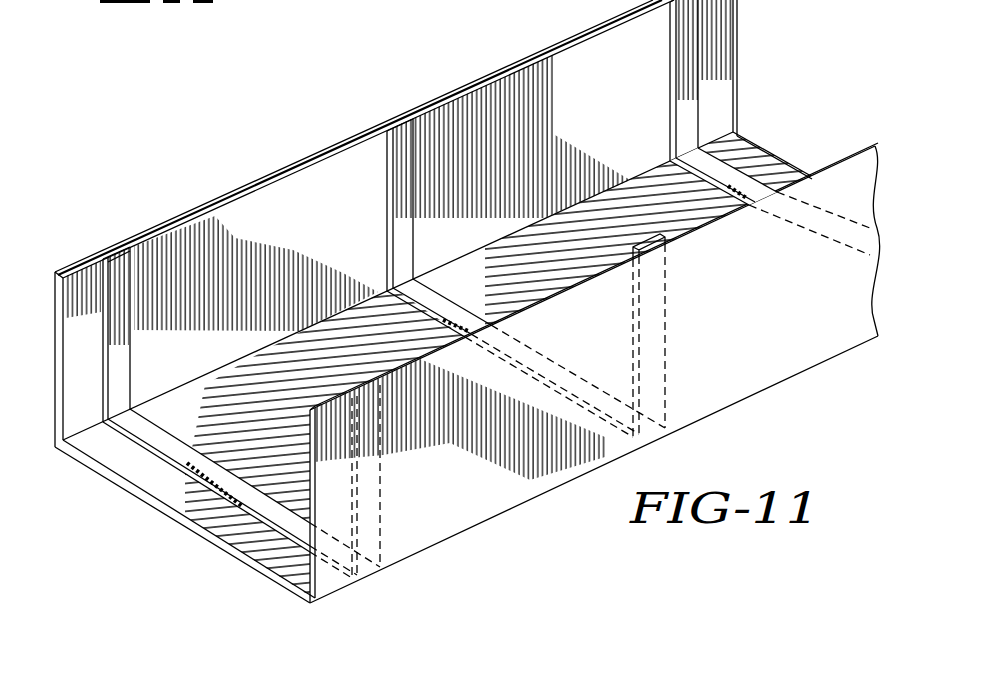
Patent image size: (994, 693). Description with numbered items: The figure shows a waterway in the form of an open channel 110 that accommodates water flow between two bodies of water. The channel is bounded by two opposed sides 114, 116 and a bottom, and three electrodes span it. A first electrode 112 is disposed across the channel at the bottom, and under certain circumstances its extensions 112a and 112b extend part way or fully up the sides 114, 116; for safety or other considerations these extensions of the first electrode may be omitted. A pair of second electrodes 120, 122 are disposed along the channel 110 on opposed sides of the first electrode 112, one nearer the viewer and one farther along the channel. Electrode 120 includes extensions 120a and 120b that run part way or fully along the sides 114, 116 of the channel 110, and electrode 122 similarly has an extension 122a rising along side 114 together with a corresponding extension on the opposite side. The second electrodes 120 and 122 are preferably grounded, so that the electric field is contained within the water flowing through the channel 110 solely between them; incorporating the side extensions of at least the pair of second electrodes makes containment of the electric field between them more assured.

The open channel 110 is at (150, 479).
The side of the channel 114 is at (264, 208).
The side of the channel 116 is at (480, 503).
The second electrode 120 is at (190, 462).
The extension 120a is at (122, 305).
The extension 120b is at (366, 485).
The first electrode 112 is at (462, 314).
The extension 112a is at (406, 178).
The extension 112b is at (650, 316).
The second electrode 122 is at (750, 182).
The extension 122a is at (681, 40).